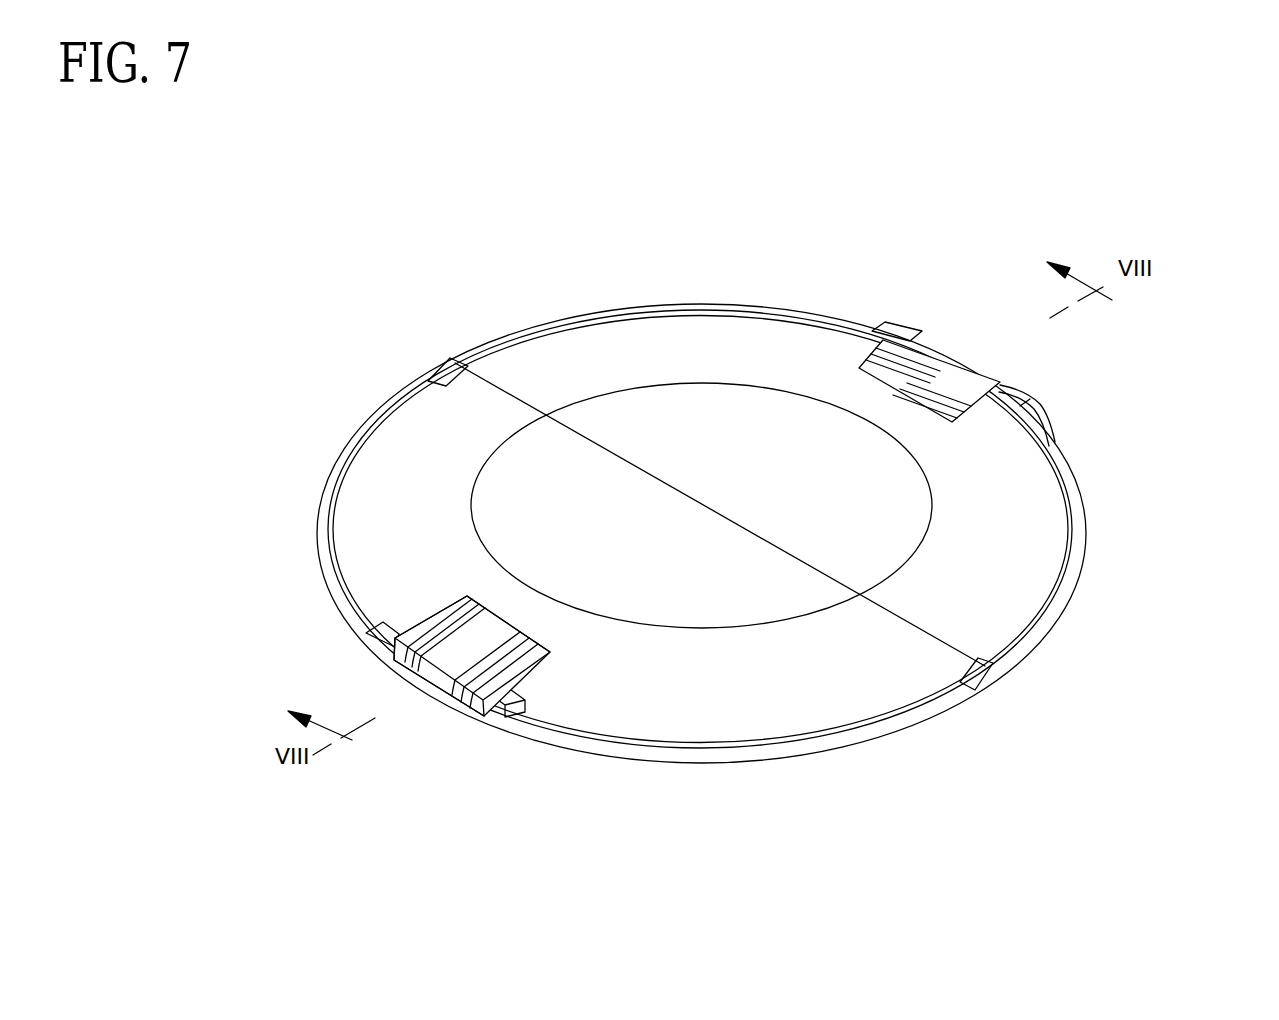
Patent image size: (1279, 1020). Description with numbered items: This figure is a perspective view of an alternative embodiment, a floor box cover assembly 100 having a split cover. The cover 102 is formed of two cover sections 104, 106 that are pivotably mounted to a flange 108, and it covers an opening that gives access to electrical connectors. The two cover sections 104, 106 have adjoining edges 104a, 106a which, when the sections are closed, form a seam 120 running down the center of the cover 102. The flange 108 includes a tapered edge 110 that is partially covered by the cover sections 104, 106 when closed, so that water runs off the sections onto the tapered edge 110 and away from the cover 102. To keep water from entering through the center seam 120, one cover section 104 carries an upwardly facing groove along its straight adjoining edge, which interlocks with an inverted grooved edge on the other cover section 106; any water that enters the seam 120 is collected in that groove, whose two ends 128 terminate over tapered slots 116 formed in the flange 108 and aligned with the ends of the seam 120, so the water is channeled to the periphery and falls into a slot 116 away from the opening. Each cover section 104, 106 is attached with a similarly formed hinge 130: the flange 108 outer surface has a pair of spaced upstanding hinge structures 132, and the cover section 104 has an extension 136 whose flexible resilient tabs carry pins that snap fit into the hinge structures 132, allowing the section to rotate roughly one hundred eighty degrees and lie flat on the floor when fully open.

The floor box cover assembly 100 is at (998, 102).
The cover 102 is at (1032, 531).
The cover section 104 is at (703, 383).
The adjoining edge 104a is at (942, 632).
The cover section 106 is at (673, 685).
The adjoining edge 106a is at (493, 423).
The flange 108 is at (1082, 575).
The tapered edge 110 is at (785, 742).
The tapered slots 116 is at (443, 372).
The seam 120 is at (490, 380).
The ends 128 is at (458, 358).
The hinge 130 is at (795, 424).
The hinge structures 132 is at (900, 322).
The extension 136 is at (950, 363).